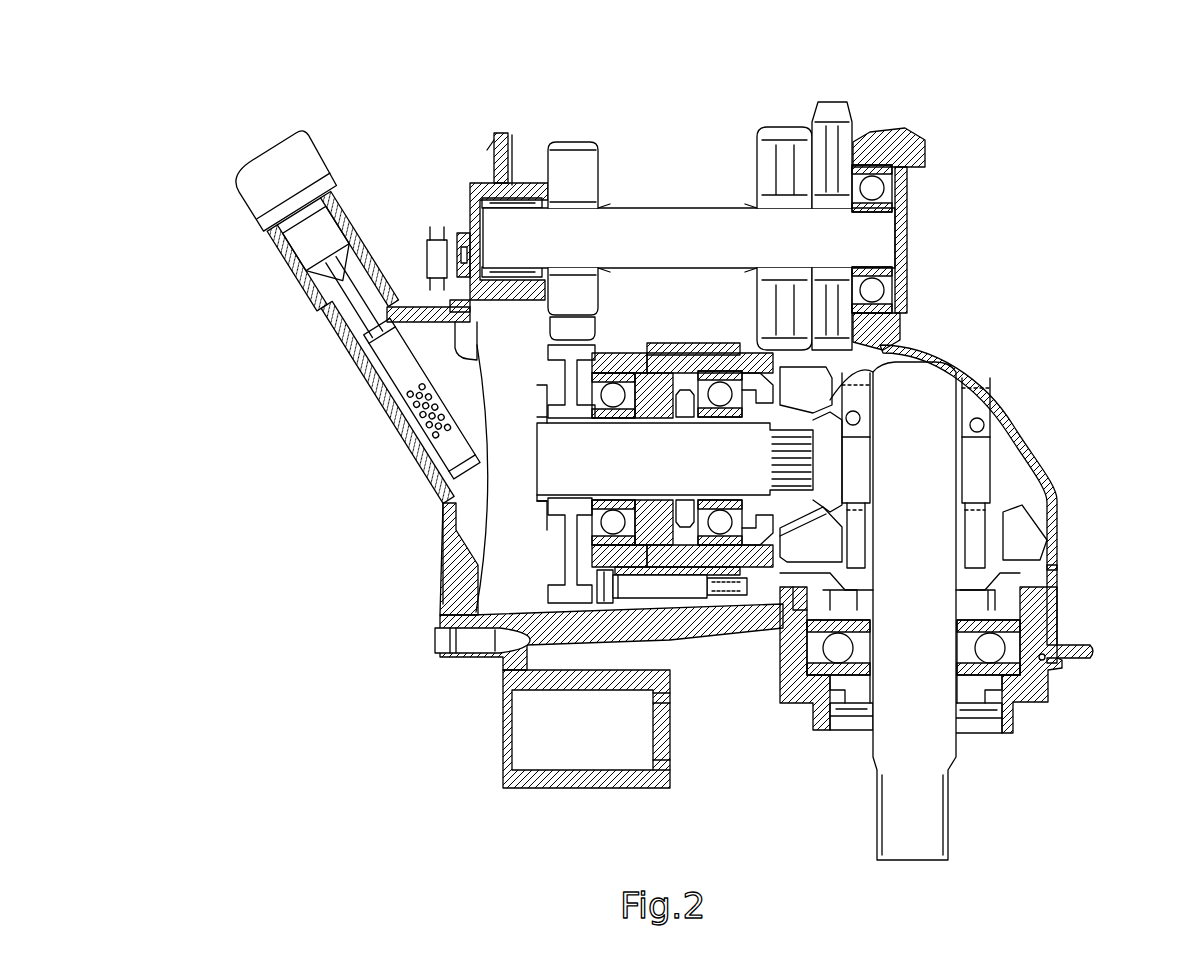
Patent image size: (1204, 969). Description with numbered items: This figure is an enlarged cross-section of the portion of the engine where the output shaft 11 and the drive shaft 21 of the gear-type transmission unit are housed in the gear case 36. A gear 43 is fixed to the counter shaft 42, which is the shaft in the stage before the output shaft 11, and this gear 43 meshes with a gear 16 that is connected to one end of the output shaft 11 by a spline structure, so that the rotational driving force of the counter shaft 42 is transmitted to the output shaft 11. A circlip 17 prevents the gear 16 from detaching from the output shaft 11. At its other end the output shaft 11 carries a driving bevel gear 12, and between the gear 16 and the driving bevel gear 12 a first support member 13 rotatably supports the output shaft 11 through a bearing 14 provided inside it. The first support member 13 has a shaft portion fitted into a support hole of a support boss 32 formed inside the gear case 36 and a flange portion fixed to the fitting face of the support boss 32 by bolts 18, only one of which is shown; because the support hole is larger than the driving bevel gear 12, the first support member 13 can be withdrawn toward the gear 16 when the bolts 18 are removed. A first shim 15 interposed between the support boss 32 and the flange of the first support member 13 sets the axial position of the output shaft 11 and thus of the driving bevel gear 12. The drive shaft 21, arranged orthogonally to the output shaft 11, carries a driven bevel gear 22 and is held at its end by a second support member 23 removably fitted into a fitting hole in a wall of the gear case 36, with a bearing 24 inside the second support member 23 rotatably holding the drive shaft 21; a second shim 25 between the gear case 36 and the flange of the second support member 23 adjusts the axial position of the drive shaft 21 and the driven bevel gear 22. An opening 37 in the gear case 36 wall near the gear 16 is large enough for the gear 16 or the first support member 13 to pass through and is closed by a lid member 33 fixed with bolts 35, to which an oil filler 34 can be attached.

The output shaft 11 is at (552, 455).
The driving bevel gear 12 is at (900, 336).
The first support member 13 is at (633, 353).
The bearing 14 is at (615, 353).
The first shim 15 is at (657, 353).
The gear 16 is at (567, 378).
The circlip 17 is at (543, 395).
The bolts 18 is at (677, 585).
The drive shaft 21 is at (935, 408).
The driven bevel gear 22 is at (1018, 527).
The second support member 23 is at (1023, 703).
The bearing 24 is at (1042, 703).
The second shim 25 is at (1063, 670).
The support boss 32 is at (680, 350).
The lid member 33 is at (410, 457).
The oil filler 34 is at (322, 272).
The bolts 35 is at (462, 645).
The gear case 36 is at (1057, 563).
The opening 37 is at (440, 590).
The counter shaft 42 is at (870, 232).
The gear 43 is at (590, 178).